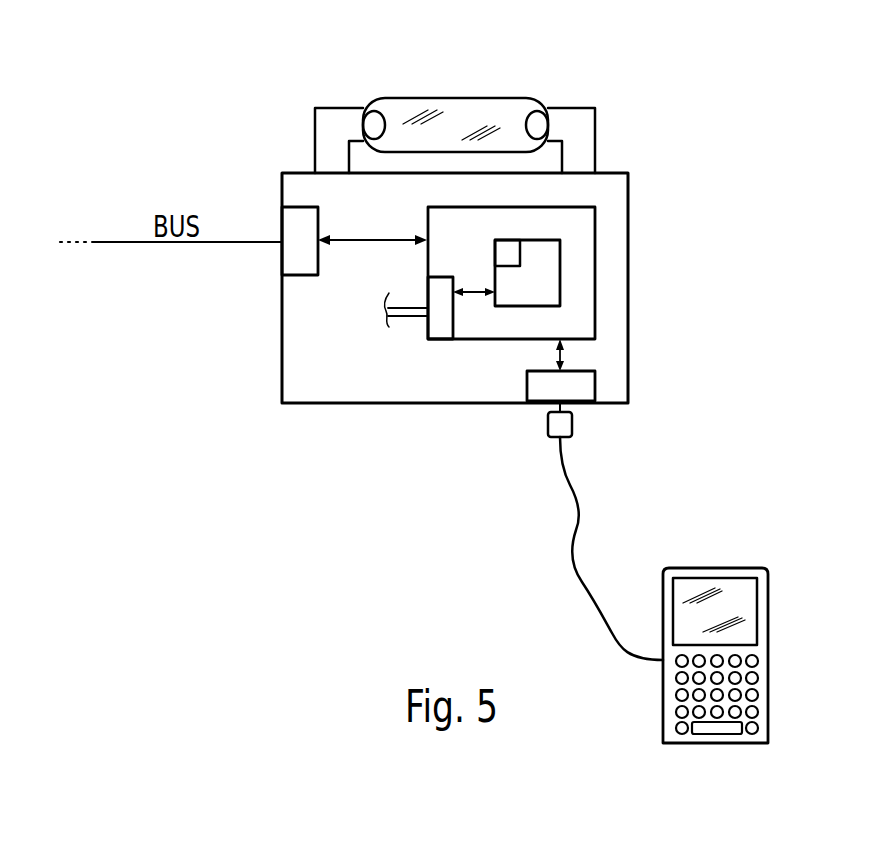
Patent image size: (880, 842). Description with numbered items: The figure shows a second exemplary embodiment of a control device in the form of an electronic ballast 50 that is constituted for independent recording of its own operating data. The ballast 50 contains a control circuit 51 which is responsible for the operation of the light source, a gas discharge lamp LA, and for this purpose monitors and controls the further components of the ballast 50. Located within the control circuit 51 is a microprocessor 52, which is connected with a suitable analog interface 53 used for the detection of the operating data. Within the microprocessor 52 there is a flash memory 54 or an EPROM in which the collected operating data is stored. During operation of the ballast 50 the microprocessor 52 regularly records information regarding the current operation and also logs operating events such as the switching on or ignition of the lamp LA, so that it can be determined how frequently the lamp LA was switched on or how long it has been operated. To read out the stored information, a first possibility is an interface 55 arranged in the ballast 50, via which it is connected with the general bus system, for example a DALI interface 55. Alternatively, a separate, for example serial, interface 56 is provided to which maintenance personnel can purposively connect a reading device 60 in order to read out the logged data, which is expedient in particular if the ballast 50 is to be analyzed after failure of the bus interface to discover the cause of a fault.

The electronic ballast 50 is at (650, 292).
The control circuit 51 is at (598, 229).
The microprocessor 52 is at (528, 306).
The analog interface 53 is at (432, 327).
The flash memory 54 is at (500, 253).
The interface 55 is at (283, 261).
The serial interface 56 is at (598, 392).
The reading device 60 is at (770, 645).
The gas discharge lamp LA is at (453, 98).